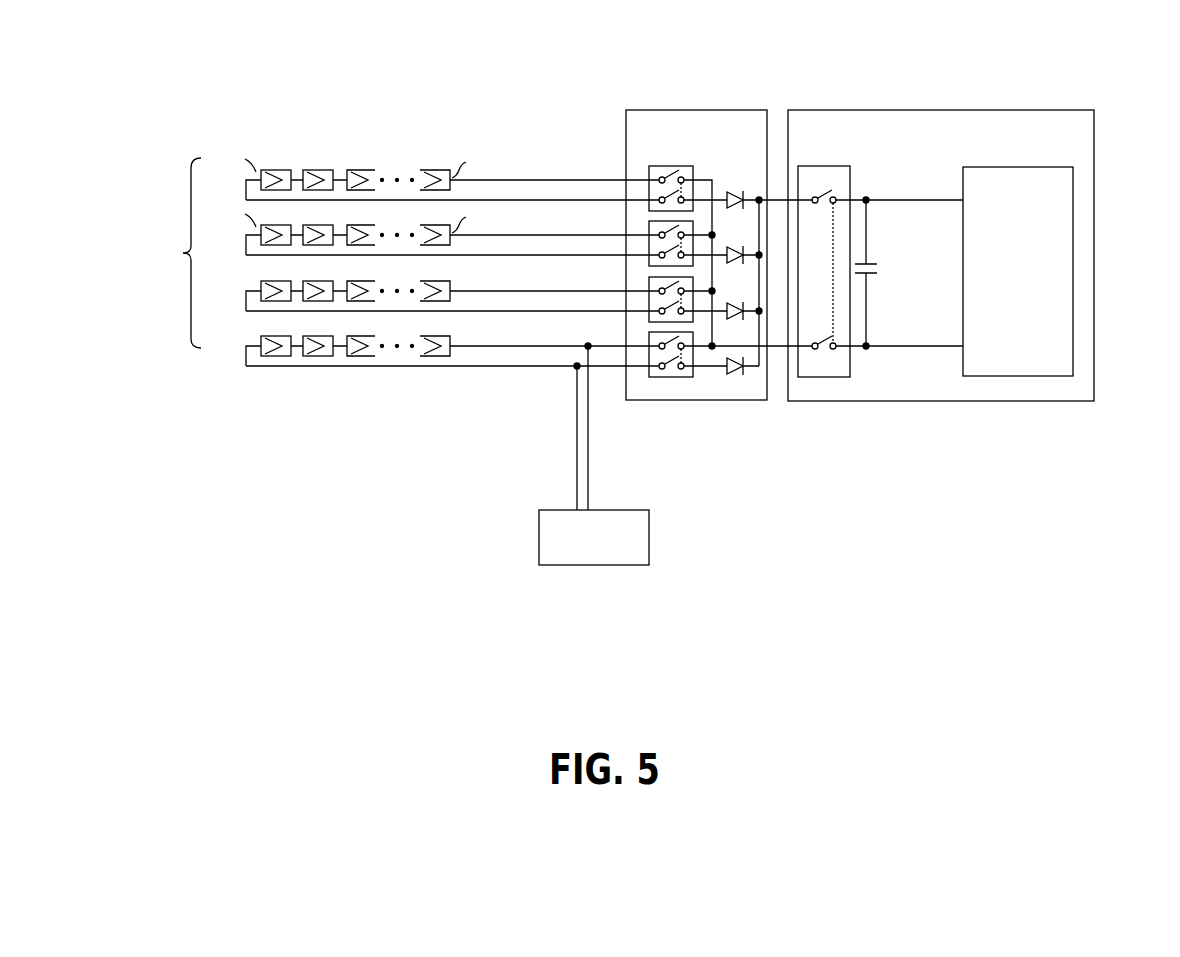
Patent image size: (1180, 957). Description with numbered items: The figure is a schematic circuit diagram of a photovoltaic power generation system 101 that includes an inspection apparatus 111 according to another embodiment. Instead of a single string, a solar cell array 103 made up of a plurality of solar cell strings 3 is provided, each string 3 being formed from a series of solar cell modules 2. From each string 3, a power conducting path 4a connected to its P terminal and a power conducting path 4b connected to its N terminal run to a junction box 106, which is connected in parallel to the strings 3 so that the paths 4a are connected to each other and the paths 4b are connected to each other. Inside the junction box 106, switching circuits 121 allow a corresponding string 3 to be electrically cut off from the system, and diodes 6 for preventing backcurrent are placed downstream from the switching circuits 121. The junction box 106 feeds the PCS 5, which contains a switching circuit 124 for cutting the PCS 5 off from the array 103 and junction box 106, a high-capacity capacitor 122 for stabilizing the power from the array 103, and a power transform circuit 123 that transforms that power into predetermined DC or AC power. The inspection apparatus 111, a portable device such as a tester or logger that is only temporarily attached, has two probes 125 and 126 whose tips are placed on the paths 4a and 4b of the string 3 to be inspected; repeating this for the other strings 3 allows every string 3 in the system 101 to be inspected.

The photovoltaic power generation system 101 is at (1142, 122).
The solar cell array 103 is at (310, 245).
The solar cell string 3 is at (242, 186).
The photovoltaic module 2 is at (278, 170).
The power conducting path 4a is at (553, 198).
The power conducting path 4b is at (508, 178).
The junction box 106 is at (650, 108).
The switching circuit 121 is at (694, 172).
The diode 6 is at (739, 195).
The PCS 5 is at (814, 108).
The switching circuit 124 is at (835, 166).
The high-capacity capacitor 122 is at (876, 262).
The power transform circuit 123 is at (1033, 166).
The probe 125 is at (578, 427).
The probe 126 is at (589, 451).
The inspection apparatus 111 is at (650, 542).